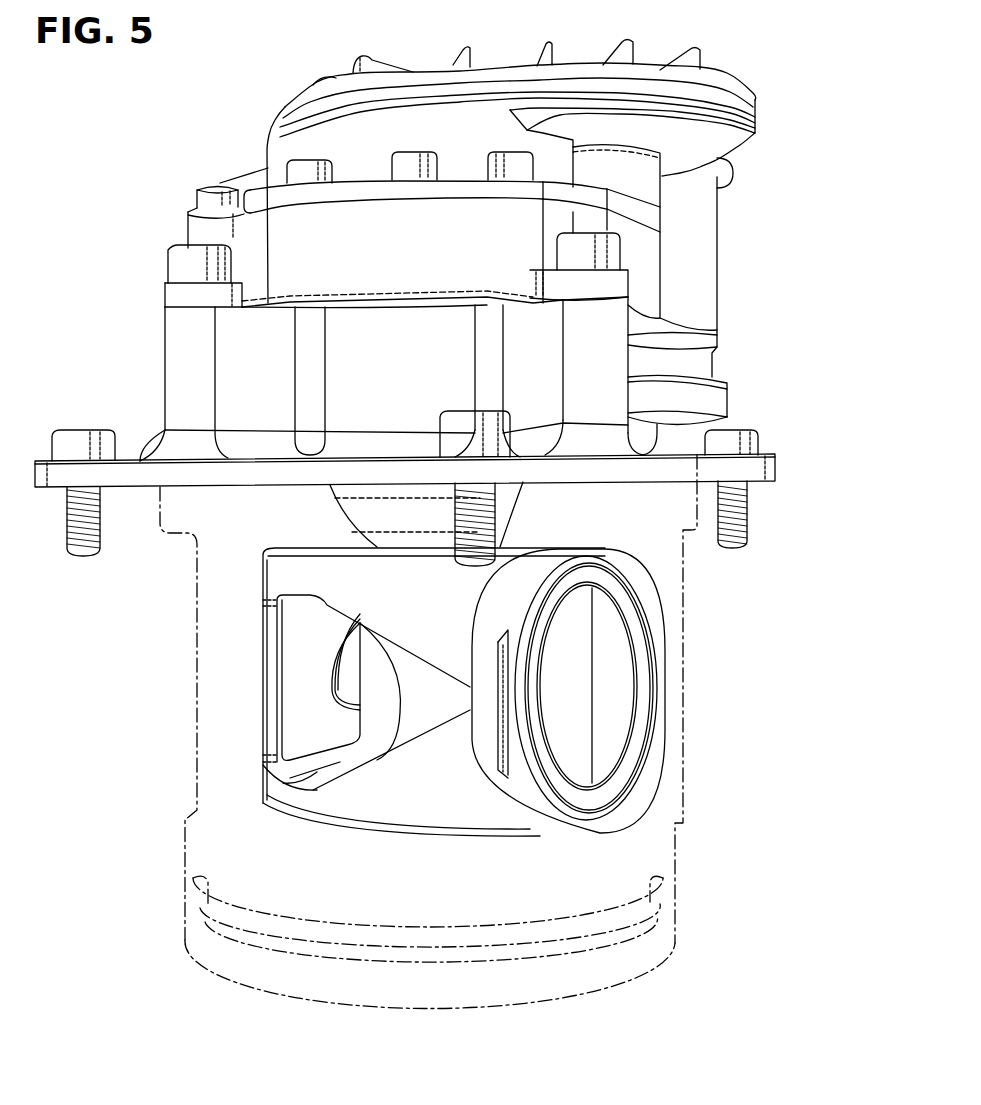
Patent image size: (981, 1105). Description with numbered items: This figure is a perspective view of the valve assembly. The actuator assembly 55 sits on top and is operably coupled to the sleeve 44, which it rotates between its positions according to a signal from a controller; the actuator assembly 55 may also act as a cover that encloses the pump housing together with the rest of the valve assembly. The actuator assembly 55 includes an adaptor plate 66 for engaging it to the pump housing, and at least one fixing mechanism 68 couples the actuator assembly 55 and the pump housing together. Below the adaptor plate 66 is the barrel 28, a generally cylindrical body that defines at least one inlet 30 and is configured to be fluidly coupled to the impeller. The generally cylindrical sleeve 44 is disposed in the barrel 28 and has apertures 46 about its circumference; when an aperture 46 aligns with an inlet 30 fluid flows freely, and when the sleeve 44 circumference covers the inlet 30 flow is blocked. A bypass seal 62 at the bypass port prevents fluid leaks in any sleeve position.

The actuator assembly 55 is at (755, 246).
The adaptor plate 66 is at (703, 471).
The fixing mechanism 68 is at (737, 542).
The sleeve 44 is at (280, 579).
The inlet 30 is at (573, 683).
The bypass seal 62 is at (527, 747).
The barrel 28 is at (653, 842).
The aperture 46 is at (317, 770).